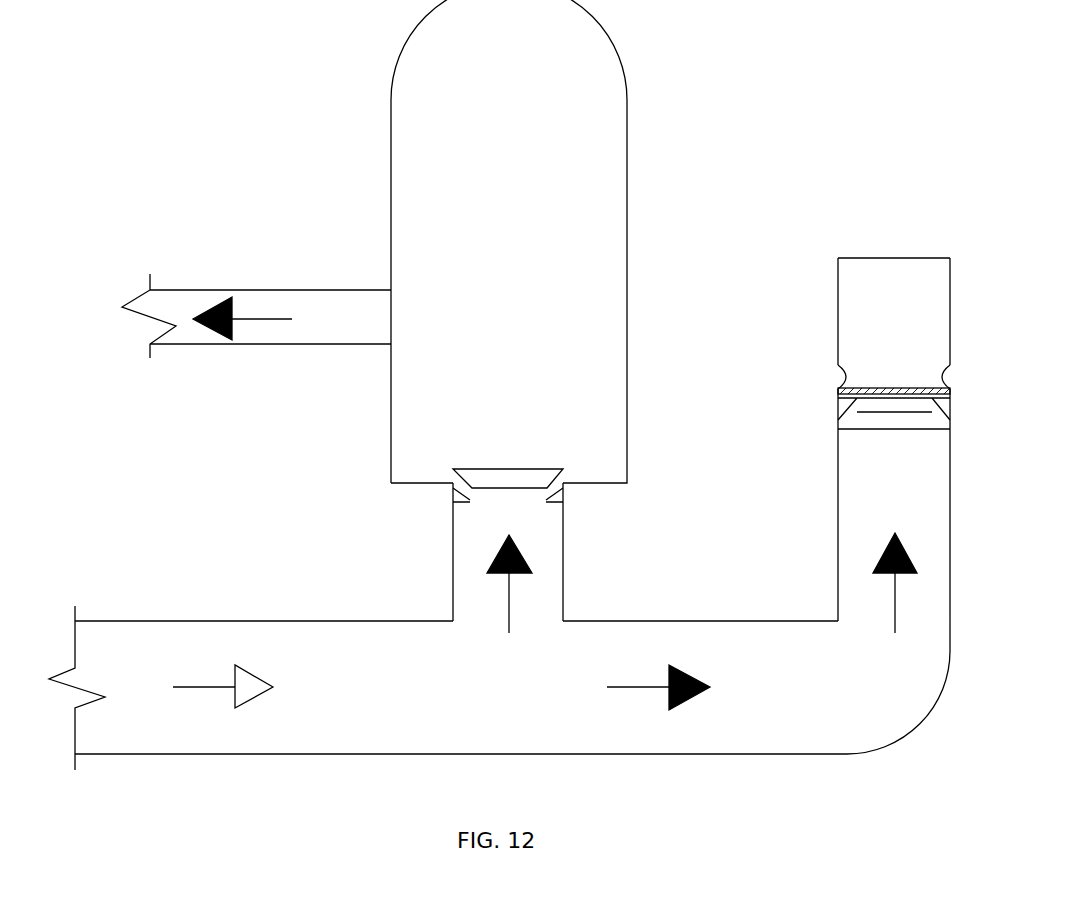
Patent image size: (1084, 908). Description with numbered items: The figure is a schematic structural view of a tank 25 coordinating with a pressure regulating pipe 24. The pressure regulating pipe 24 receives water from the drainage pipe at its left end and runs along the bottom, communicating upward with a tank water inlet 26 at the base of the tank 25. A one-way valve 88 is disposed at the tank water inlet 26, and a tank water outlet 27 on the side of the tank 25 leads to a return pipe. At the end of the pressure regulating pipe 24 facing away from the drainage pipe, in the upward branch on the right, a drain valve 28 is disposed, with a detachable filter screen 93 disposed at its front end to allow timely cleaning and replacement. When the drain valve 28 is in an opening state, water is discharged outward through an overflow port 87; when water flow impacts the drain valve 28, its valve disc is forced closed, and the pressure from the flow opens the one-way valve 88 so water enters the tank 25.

The pressure regulating pipe 24 is at (427, 637).
The tank 25 is at (411, 127).
The tank water inlet 26 is at (563, 553).
The tank water outlet 27 is at (335, 317).
The drain valve 28 is at (897, 425).
The overflow port 87 is at (845, 375).
The one-way valve 88 is at (540, 471).
The detachable filter screen 93 is at (838, 393).